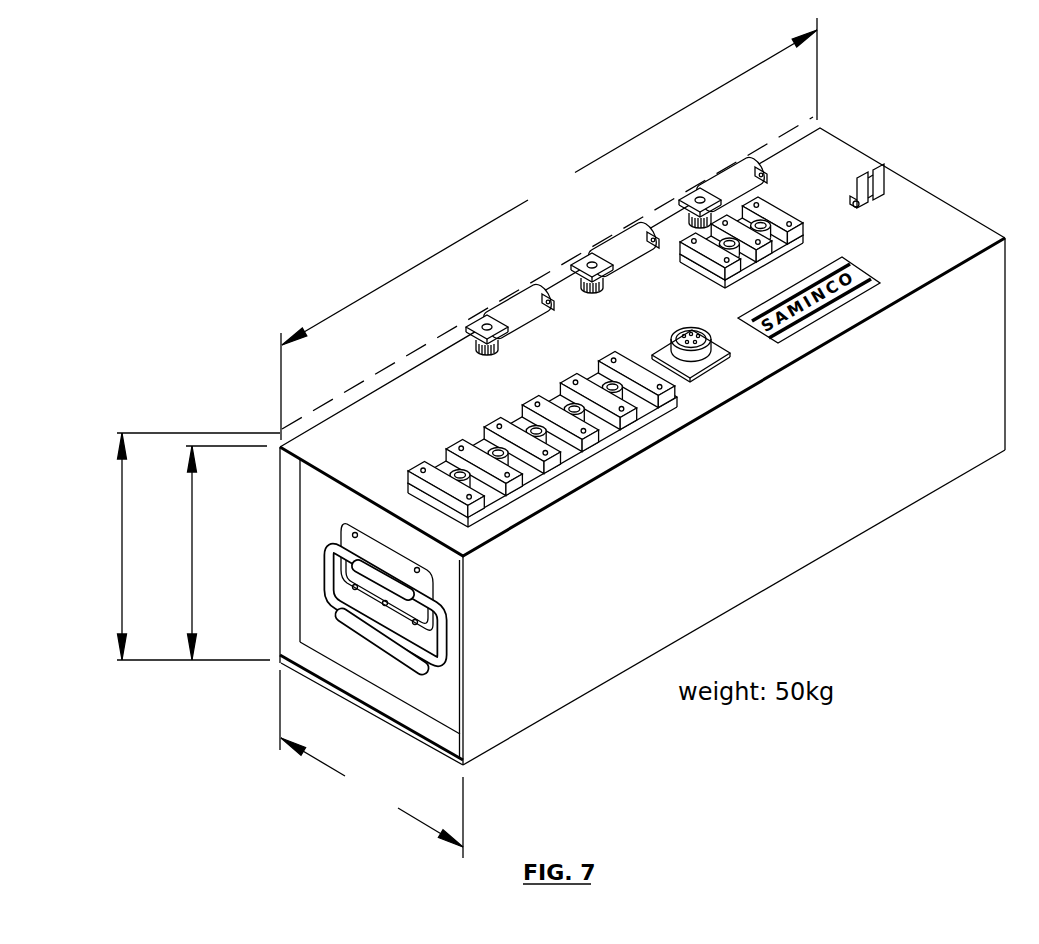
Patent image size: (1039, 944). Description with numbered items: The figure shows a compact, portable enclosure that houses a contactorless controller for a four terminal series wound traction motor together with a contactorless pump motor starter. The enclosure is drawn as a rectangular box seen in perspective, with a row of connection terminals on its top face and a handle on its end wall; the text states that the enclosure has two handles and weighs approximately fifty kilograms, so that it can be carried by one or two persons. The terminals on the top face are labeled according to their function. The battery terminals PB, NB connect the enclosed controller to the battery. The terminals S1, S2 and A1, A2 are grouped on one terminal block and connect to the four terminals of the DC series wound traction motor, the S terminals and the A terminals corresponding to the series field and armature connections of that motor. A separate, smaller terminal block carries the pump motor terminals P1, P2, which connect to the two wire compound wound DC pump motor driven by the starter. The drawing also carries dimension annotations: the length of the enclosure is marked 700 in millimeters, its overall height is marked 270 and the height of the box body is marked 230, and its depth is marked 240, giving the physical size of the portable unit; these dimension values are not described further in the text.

The battery terminal PB is at (439, 478).
The battery terminal NB is at (475, 456).
The traction motor terminal S1 is at (512, 436).
The traction motor terminal S2 is at (547, 416).
The traction motor terminal A1 is at (584, 395).
The traction motor terminal A2 is at (619, 374).
The pump motor terminal P1 is at (741, 259).
The pump motor terminal P2 is at (772, 241).
The 700 mm length dimension 700 is at (549, 229).
The 270 mm overall height dimension 270 is at (176, 546).
The 230 mm housing height dimension 230 is at (207, 553).
The 240 mm depth dimension 240 is at (371, 764).